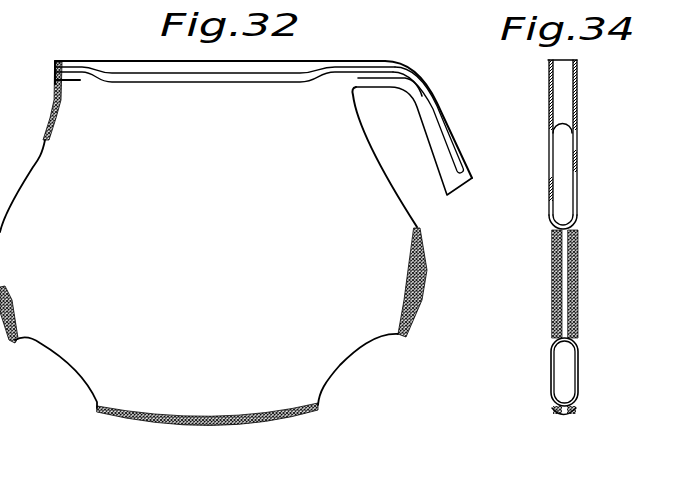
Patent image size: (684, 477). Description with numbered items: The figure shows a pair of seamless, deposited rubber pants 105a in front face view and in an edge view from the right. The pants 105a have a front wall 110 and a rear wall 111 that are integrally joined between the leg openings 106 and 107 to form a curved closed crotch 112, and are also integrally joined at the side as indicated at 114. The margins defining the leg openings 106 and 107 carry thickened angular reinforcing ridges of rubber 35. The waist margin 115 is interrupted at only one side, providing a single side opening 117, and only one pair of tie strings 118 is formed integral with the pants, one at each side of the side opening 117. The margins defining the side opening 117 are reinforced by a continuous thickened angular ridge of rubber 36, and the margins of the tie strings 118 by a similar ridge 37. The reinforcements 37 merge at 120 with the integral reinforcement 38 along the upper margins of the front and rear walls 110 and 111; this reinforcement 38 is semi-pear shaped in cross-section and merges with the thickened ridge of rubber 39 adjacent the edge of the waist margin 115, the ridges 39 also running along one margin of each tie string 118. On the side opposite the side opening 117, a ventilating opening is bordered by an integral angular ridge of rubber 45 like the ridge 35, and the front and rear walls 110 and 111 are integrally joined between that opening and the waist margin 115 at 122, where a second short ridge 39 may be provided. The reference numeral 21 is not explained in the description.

In FIG. 32, the side member 21 is at (27, 179).
In FIG. 32, the thickened angular reinforcing ridge of rubber 35 is at (84, 382).
In FIG. 34, the thickened angular reinforcing ridge of rubber 35 is at (580, 354).
In FIG. 32, the thickened angular ridge of rubber 36 is at (382, 157).
In FIG. 32, the thickened angular ridge of rubber 37 is at (473, 123).
In FIG. 32, the integral reinforcement 38 is at (383, 60).
In FIG. 32, the thickened ridge of rubber 39 is at (55, 68).
In FIG. 32, the integral angular ridge of rubber 45 is at (34, 166).
In FIG. 32, the pants 105a is at (328, 80).
In FIG. 32, the leg opening 106 is at (81, 386).
In FIG. 32, the leg opening 107 is at (345, 376).
In FIG. 34, the leg opening 107 is at (570, 381).
In FIG. 32, the front wall 110 is at (306, 223).
In FIG. 34, the front wall 110 is at (552, 296).
In FIG. 34, the rear wall 111 is at (578, 298).
In FIG. 32, the curved closed crotch 112 is at (233, 421).
In FIG. 34, the curved closed crotch 112 is at (575, 413).
In FIG. 32, the side joint 114 is at (425, 278).
In FIG. 34, the side joint 114 is at (572, 270).
In FIG. 32, the waist margin 115 is at (152, 70).
In FIG. 34, the waist margin 115 is at (548, 62).
In FIG. 32, the side opening 117 is at (397, 182).
In FIG. 34, the side opening 117 is at (567, 216).
In FIG. 32, the tie string 118 is at (450, 112).
In FIG. 34, the tie string 118 is at (551, 152).
In FIG. 32, the merging point 120 is at (435, 83).
In FIG. 32, the joined portion 122 is at (52, 108).
In FIG. 34, the joined portion 122 is at (565, 108).